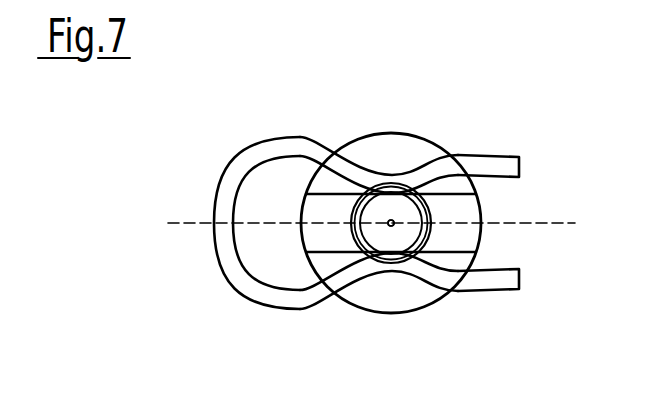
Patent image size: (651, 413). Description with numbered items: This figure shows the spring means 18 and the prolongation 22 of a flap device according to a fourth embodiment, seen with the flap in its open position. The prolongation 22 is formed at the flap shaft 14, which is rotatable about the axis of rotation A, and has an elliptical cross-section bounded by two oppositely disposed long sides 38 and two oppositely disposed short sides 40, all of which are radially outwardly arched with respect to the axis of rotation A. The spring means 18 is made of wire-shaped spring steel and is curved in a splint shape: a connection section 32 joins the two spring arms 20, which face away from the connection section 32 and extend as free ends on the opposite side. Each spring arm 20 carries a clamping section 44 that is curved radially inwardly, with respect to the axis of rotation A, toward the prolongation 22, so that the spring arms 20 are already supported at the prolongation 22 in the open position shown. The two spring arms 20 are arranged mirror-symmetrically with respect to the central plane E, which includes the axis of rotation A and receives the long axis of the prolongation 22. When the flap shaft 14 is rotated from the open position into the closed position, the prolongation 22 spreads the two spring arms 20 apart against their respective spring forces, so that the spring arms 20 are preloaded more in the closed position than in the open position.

The flap shaft 14 is at (410, 152).
The spring means 18 is at (315, 226).
The spring arm 20 is at (507, 168).
The prolongation 22 is at (373, 237).
The connection section 32 is at (225, 240).
The long side 38 is at (416, 184).
The short side 40 is at (389, 222).
The clamping section 44 is at (388, 186).
The axis of rotation A is at (390, 226).
The central plane E is at (568, 222).